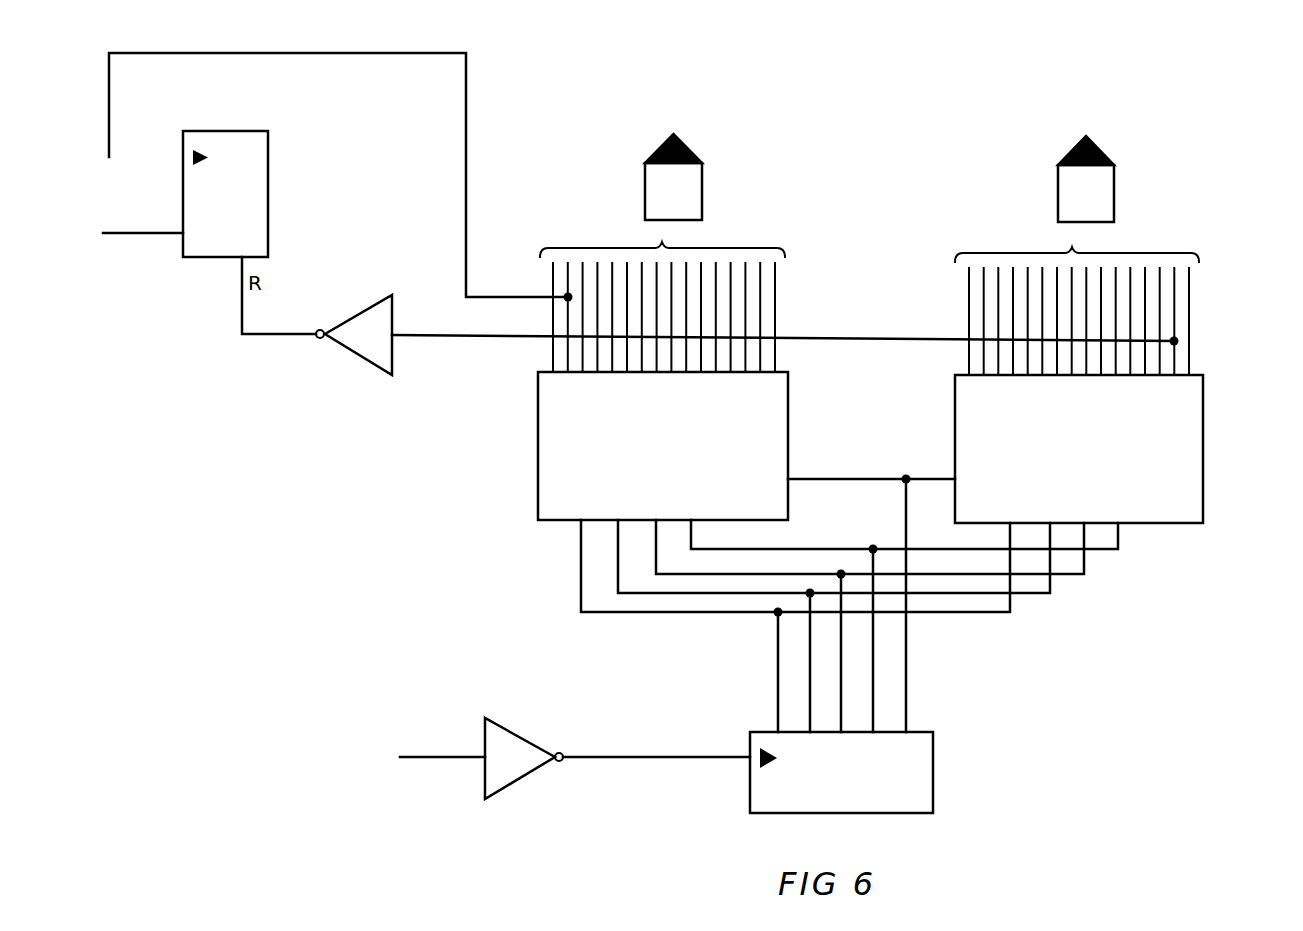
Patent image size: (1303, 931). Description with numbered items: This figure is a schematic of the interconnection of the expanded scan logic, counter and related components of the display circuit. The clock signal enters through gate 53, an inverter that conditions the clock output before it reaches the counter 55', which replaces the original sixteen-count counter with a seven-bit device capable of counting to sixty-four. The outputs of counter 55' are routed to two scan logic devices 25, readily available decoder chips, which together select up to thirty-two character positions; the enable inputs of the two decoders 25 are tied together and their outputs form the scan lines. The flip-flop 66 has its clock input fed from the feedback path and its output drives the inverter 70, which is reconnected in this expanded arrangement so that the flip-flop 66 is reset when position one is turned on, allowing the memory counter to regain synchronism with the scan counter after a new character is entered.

The flip-flop 66 is at (232, 131).
The inverter 70 is at (350, 348).
The scan logic device 25 is at (790, 400).
The counter 55' is at (869, 772).
The gate 53 is at (497, 797).